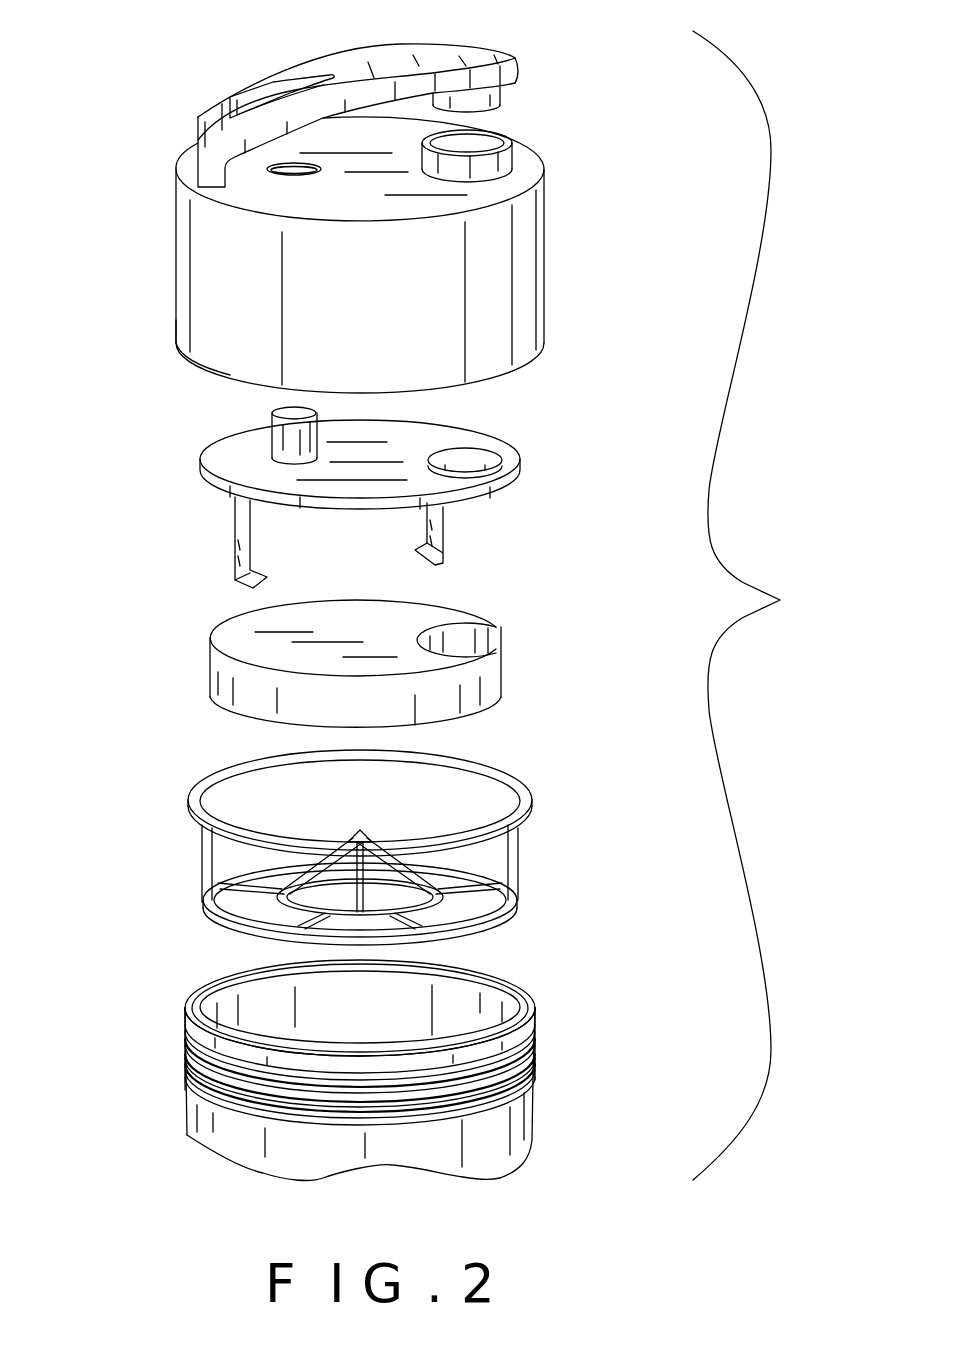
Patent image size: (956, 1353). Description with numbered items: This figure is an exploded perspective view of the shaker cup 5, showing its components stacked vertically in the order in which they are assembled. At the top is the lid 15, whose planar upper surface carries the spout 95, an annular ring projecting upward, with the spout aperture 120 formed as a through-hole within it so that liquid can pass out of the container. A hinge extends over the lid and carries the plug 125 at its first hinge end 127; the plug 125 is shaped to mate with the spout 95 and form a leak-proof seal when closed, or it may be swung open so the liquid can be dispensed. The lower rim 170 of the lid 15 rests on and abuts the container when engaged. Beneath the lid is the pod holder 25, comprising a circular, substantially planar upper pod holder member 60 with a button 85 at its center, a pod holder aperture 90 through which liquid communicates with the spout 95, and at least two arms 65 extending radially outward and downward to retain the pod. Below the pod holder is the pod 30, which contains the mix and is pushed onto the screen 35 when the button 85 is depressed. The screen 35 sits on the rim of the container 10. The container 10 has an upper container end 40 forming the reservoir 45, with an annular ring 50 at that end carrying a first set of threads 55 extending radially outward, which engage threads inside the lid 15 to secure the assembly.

The shaker cup 5 is at (752, 605).
The container 10 is at (340, 1063).
The lid 15 is at (172, 257).
The pod holder 25 is at (359, 484).
The pod 30 is at (210, 672).
The screen 35 is at (188, 808).
The upper container end 40 is at (535, 1112).
The reservoir 45 is at (480, 1012).
The annular ring 50 is at (176, 1075).
The first set of threads 55 is at (185, 1037).
The upper pod holder member 60 is at (453, 433).
The arms 65 is at (232, 531).
The button 85 is at (283, 437).
The pod holder aperture 90 is at (476, 457).
The spout 95 is at (493, 163).
The spout aperture 120 is at (475, 138).
The plug 125 is at (493, 100).
The first hinge end 127 is at (478, 60).
The lower rim 170 is at (186, 357).